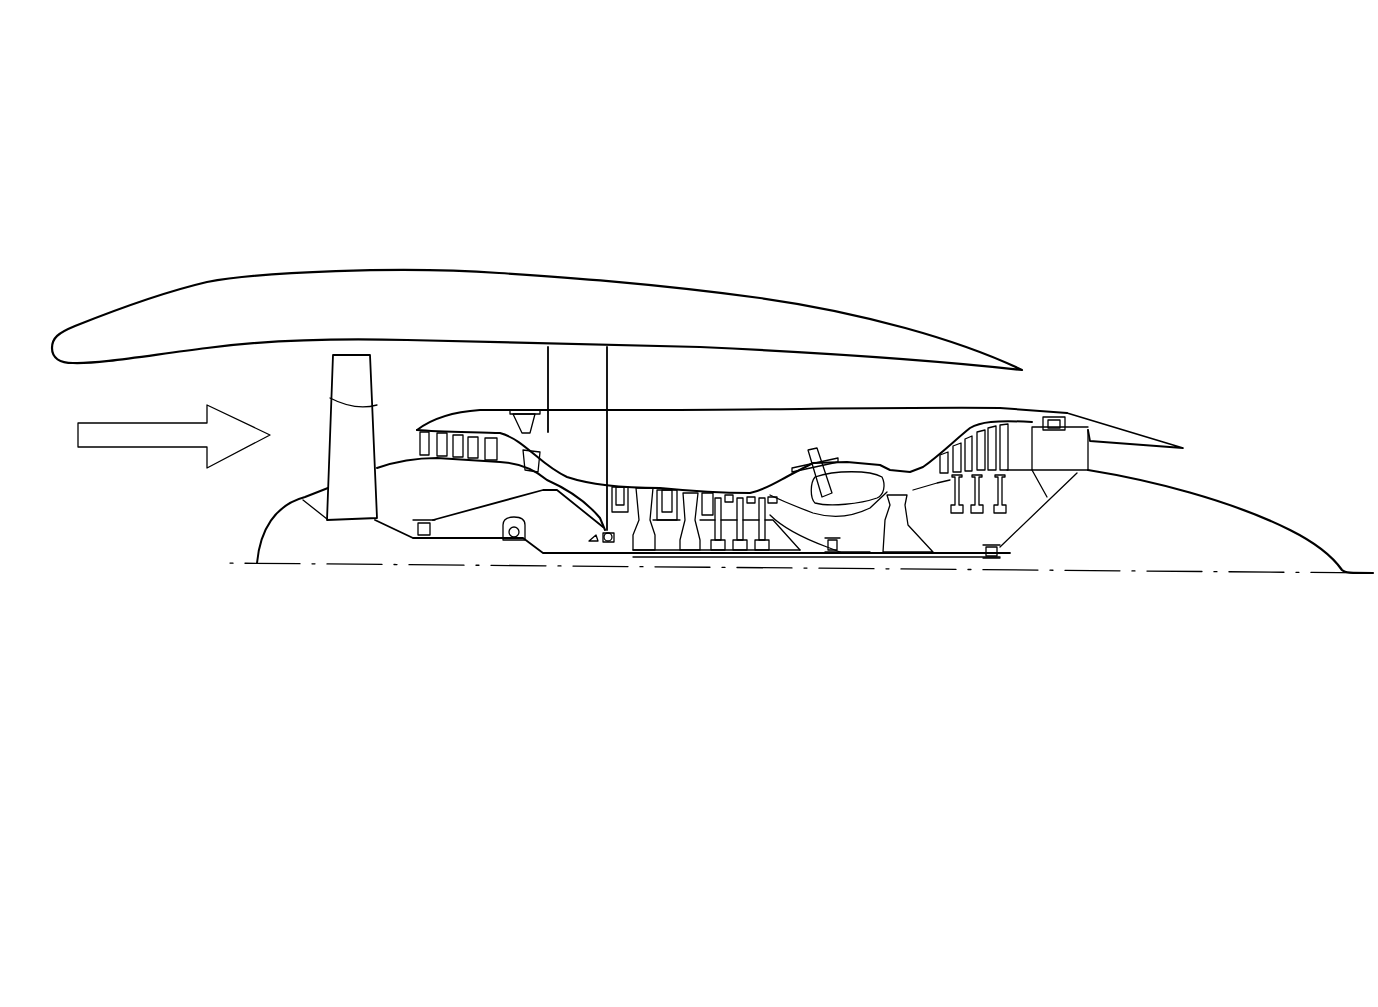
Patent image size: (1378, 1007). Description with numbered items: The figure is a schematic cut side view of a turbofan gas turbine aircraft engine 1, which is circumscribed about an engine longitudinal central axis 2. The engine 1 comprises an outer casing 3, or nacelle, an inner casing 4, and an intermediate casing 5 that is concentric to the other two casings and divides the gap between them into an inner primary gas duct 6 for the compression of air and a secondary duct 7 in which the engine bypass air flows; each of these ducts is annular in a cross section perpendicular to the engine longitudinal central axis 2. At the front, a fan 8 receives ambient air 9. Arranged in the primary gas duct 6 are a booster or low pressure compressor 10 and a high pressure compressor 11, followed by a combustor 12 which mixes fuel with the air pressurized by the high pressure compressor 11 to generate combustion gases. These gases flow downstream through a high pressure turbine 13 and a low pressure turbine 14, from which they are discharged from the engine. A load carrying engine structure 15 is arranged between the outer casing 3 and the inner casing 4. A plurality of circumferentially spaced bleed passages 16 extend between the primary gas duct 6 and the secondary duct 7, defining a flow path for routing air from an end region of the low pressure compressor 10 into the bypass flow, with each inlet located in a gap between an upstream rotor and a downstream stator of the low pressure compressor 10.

The turbofan gas turbine aircraft engine 1 is at (1092, 158).
The engine longitudinal central axis 2 is at (1212, 573).
The outer casing 3 is at (163, 307).
The inner casing 4 is at (550, 532).
The intermediate casing 5 is at (765, 430).
The primary gas duct 6 is at (400, 434).
The secondary duct 7 is at (490, 386).
The fan 8 is at (356, 360).
The ambient air 9 is at (125, 442).
The low pressure compressor 10 is at (430, 481).
The high pressure compressor 11 is at (725, 590).
The combustor 12 is at (860, 493).
The high pressure turbine 13 is at (920, 596).
The low pressure turbine 14 is at (1012, 533).
The load carrying engine structure 15 is at (598, 322).
The bleed passages 16 is at (540, 432).